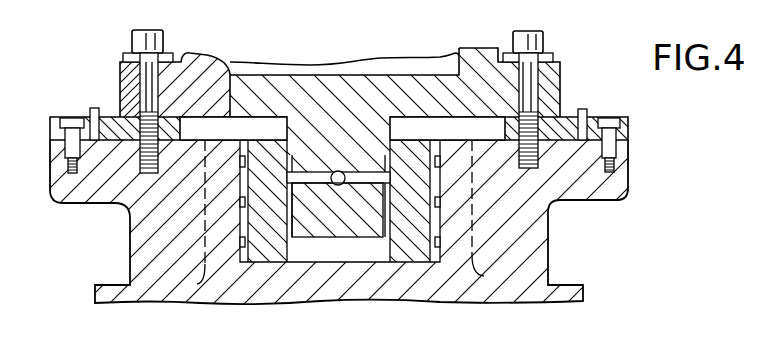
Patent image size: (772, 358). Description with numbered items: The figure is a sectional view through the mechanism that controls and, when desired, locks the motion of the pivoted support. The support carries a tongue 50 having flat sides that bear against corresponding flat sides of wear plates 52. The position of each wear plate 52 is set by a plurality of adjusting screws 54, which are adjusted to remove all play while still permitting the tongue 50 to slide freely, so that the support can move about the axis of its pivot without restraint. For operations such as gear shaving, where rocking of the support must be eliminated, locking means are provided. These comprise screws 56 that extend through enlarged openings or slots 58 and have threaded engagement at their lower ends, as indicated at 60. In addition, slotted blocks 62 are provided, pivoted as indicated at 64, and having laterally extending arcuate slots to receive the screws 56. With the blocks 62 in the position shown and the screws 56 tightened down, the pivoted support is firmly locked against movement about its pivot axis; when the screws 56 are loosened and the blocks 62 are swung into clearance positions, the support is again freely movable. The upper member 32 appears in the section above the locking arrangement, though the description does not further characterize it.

The upper mold plate 32 is at (414, 179).
The core insert with pivot pin 50 is at (307, 238).
The right wall insert 52 is at (441, 229).
The left wall insert 54 is at (244, 222).
The clamp bolt 56 is at (365, 84).
The bolt shank 58 is at (535, 93).
The base body 60 is at (537, 163).
The left clamp block 62 is at (117, 117).
The locating screw 64 is at (613, 117).